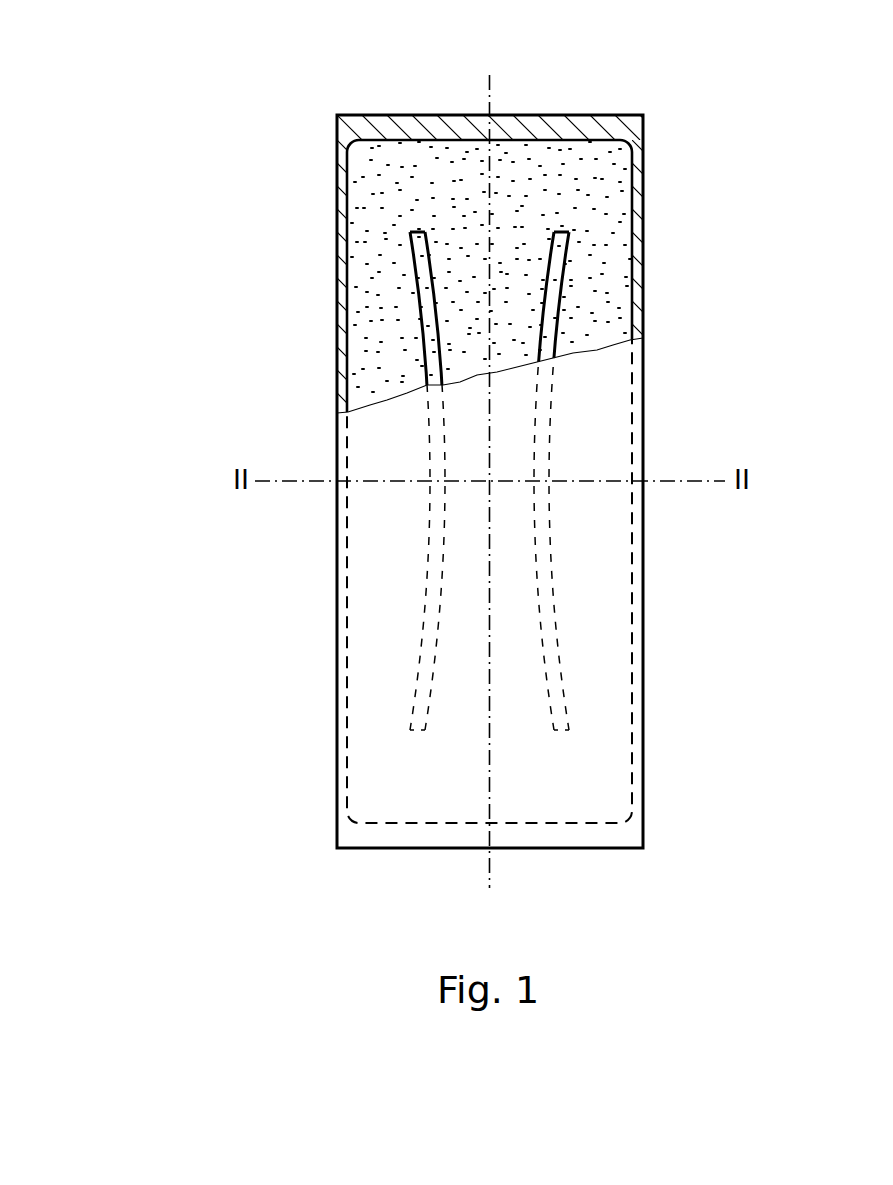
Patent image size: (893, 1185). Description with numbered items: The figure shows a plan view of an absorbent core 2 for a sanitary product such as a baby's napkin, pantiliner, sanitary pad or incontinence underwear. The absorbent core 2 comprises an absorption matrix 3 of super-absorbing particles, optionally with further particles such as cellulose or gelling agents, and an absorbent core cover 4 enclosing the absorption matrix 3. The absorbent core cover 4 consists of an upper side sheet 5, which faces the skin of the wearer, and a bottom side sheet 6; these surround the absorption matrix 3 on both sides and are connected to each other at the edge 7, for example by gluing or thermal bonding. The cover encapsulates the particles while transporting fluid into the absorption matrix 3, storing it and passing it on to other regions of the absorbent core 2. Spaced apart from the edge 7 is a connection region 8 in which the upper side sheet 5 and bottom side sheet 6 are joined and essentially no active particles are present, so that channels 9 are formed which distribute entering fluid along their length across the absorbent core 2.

The absorbent core 2 is at (243, 82).
The absorption matrix 3 is at (575, 178).
The absorbent core cover 4 is at (382, 699).
The upper side sheet 5 is at (602, 410).
The bottom side sheet 6 is at (565, 130).
The edge 7 is at (342, 358).
The connection region 8 is at (422, 290).
The channel 9 is at (432, 632).